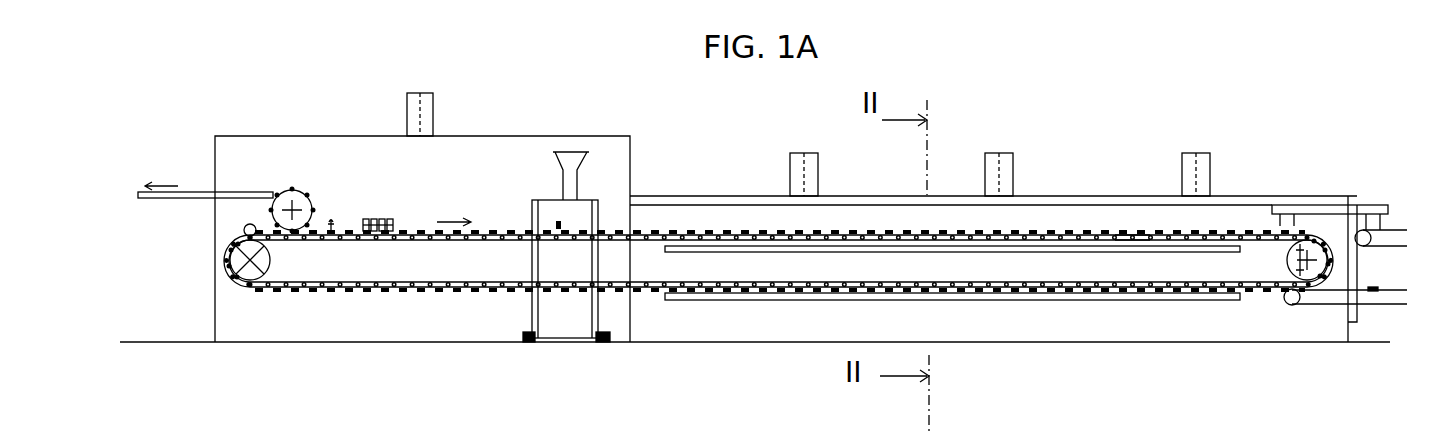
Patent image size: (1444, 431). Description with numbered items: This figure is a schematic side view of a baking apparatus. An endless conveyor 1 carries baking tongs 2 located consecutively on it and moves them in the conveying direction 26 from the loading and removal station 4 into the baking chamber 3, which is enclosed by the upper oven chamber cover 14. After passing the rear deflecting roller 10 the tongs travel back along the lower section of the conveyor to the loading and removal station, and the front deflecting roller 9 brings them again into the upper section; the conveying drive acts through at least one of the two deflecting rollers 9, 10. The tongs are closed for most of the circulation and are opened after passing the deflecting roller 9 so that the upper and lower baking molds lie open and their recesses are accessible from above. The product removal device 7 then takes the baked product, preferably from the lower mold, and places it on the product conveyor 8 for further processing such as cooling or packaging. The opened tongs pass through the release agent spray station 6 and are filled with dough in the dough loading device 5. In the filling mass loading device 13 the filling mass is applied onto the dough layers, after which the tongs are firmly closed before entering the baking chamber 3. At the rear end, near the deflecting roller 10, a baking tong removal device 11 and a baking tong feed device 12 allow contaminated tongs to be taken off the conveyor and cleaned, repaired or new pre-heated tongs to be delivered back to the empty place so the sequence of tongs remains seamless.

The endless conveyor 1 is at (420, 300).
The baking tongs 2 is at (1097, 231).
The baking chamber 3 is at (1130, 226).
The loading and removal station 4 is at (497, 137).
The dough loading device 5 is at (377, 215).
The release agent spray station 6 is at (330, 216).
The product removal device 7 is at (290, 205).
The product conveyor 8 is at (187, 192).
The front deflecting roller 9 is at (250, 283).
The rear deflecting roller 10 is at (1307, 284).
The baking tong removal device 11 is at (1362, 205).
The baking tong feed device 12 is at (1372, 297).
The filling mass loading device 13 is at (573, 168).
The upper oven chamber cover 14 is at (700, 196).
The conveying direction 26 is at (450, 221).